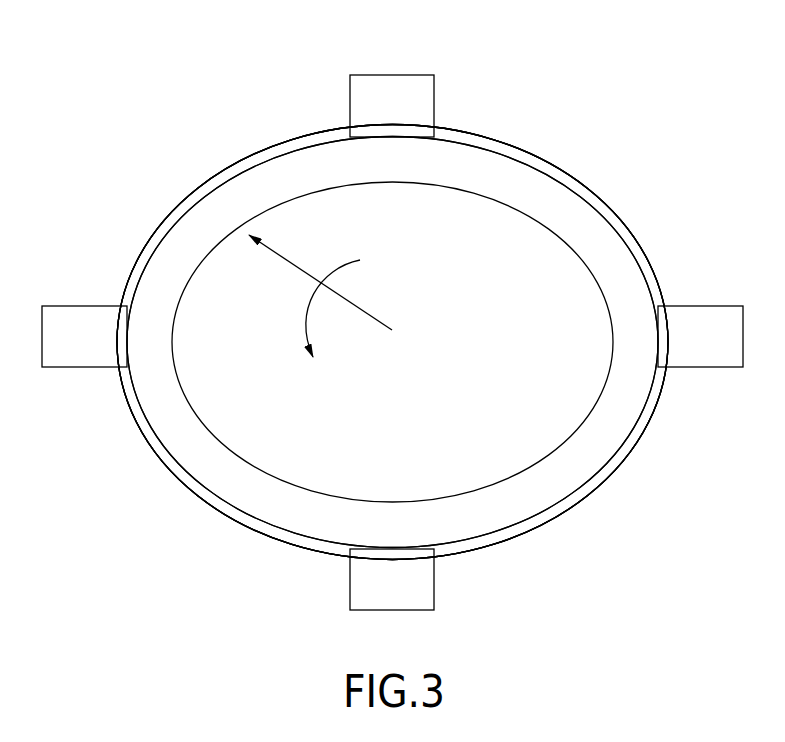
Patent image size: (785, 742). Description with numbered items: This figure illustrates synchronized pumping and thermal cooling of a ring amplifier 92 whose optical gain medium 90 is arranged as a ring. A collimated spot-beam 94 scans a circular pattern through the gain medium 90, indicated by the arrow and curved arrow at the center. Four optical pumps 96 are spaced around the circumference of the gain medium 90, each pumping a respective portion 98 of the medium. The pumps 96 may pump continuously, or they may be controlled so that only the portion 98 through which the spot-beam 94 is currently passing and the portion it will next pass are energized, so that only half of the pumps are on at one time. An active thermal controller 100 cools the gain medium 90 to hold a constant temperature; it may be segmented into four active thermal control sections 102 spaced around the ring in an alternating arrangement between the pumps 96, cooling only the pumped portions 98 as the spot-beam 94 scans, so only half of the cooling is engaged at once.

The optical gain medium 90 is at (285, 150).
The ring amplifier 92 is at (590, 70).
The collimated spot-beam 94 is at (297, 268).
The optical pumps 96 is at (434, 92).
The portions of the gain medium 98 is at (237, 218).
The active thermal controller 100 is at (155, 533).
The active thermal control sections 102 is at (225, 168).